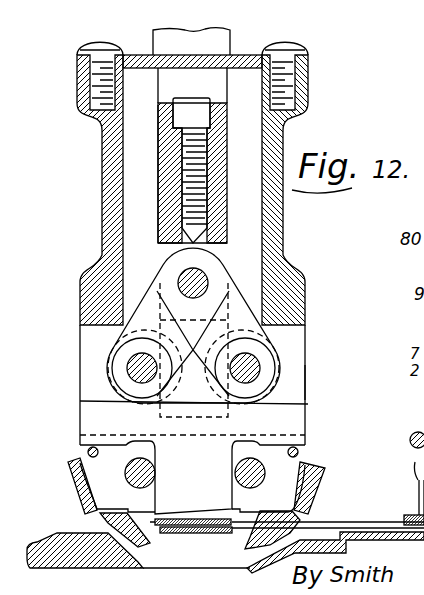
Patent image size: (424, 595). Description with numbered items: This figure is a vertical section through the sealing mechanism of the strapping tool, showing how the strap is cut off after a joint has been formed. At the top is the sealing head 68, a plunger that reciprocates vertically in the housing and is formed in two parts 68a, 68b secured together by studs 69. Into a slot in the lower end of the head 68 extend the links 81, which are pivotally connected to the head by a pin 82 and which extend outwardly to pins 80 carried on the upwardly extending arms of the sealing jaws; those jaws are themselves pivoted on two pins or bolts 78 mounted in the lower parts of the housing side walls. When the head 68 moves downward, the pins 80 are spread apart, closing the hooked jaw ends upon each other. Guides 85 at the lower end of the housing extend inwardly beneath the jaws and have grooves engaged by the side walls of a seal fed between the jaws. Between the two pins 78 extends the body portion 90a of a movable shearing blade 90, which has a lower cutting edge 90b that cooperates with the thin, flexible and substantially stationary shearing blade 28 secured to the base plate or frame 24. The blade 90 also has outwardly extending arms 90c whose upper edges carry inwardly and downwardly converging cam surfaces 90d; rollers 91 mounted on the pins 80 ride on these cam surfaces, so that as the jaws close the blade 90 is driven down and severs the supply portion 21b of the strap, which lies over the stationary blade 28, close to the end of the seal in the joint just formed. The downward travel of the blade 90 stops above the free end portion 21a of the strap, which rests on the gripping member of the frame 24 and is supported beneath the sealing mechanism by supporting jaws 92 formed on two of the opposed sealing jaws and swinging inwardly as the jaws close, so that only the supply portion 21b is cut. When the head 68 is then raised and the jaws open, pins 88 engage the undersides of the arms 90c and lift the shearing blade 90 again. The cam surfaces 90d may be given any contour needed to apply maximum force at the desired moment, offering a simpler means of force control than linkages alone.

The sealing head 68 is at (166, 101).
The sealing head part 68a is at (158, 137).
The sealing head part 68b is at (160, 181).
The studs 69 is at (194, 109).
The pin 82 is at (206, 284).
The rollers 91 is at (110, 350).
The pins 80 is at (126, 368).
The links 81 is at (195, 360).
The movable shearing blade 90 is at (200, 418).
The outwardly extending arms 90c is at (78, 403).
The cam surfaces 90d is at (296, 387).
The body portion 90a is at (221, 498).
The lower cutting edge 90b is at (197, 532).
The pins 88 is at (300, 459).
The supply portion of the strap 21b is at (167, 512).
The free end portion of the strap 21a is at (220, 526).
The pins or bolts 78 is at (68, 462).
The guides 85 is at (325, 489).
The shearing blade 28 is at (153, 522).
The supporting jaws 92 is at (97, 528).
The base plate or frame 24 is at (55, 541).